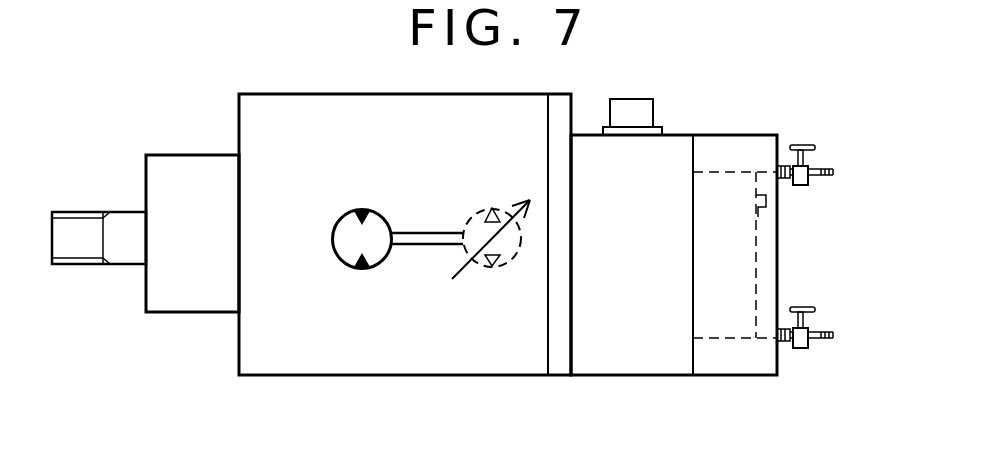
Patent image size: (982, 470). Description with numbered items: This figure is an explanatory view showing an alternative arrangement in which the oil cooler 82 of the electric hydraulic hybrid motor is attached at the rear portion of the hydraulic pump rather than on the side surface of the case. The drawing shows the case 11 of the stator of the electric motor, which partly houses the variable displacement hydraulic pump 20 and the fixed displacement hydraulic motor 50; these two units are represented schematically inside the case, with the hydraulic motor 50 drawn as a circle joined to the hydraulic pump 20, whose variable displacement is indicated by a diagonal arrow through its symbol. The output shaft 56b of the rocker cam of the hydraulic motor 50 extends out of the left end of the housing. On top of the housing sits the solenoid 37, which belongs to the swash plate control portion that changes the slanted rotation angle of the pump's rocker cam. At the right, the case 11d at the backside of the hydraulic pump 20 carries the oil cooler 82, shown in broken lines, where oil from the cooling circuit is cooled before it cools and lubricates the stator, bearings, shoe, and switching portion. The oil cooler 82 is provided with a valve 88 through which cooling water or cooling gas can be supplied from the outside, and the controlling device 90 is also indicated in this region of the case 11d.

The case 11 is at (465, 367).
The case 11d is at (695, 302).
The output shaft 56b is at (130, 256).
The fixed displacement hydraulic motor 50 is at (372, 208).
The variable displacement hydraulic pump 20 is at (492, 208).
The solenoid 37 is at (628, 104).
The oil cooler 82 is at (745, 272).
The controlling device 90 is at (764, 209).
The valve 88 is at (817, 348).